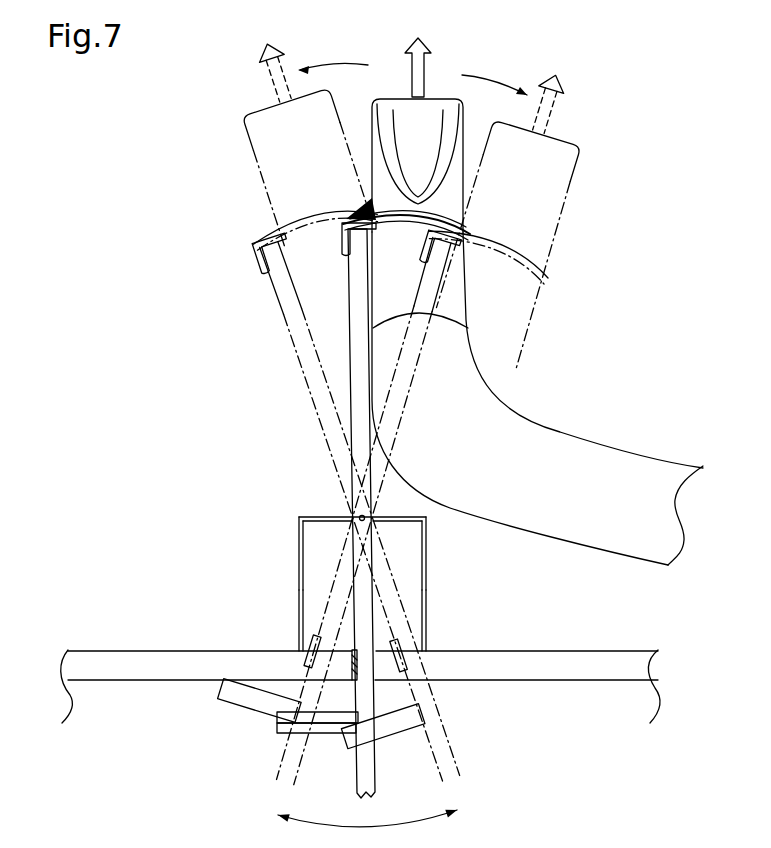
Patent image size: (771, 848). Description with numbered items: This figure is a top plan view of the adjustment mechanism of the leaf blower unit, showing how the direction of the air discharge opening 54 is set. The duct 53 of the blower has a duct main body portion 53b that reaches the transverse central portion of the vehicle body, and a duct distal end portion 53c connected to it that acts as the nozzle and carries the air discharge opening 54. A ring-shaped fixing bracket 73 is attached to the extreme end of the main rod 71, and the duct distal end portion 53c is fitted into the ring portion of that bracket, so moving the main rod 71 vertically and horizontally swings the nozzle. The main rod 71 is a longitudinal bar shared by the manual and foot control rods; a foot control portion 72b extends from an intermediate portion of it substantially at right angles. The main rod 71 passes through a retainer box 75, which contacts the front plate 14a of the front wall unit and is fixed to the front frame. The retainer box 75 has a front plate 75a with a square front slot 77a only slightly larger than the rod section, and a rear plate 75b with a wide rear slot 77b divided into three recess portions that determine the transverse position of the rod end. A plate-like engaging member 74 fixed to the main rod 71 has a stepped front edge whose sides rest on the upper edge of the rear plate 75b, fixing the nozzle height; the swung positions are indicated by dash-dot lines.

The air discharge opening 54 is at (394, 98).
The duct 53 is at (574, 431).
The duct main body portion 53b is at (655, 463).
The duct distal end portion 53c is at (378, 134).
The fixing bracket 73 is at (421, 202).
The main rod 71 is at (356, 377).
The retainer box 75 is at (297, 547).
The front plate 75a is at (323, 517).
The rear plate 75b is at (324, 650).
The front slot 77a is at (362, 519).
The rear slot 77b is at (408, 670).
The front plate 14a is at (517, 650).
The engaging member 74 is at (352, 670).
The foot control portion 72b is at (277, 731).